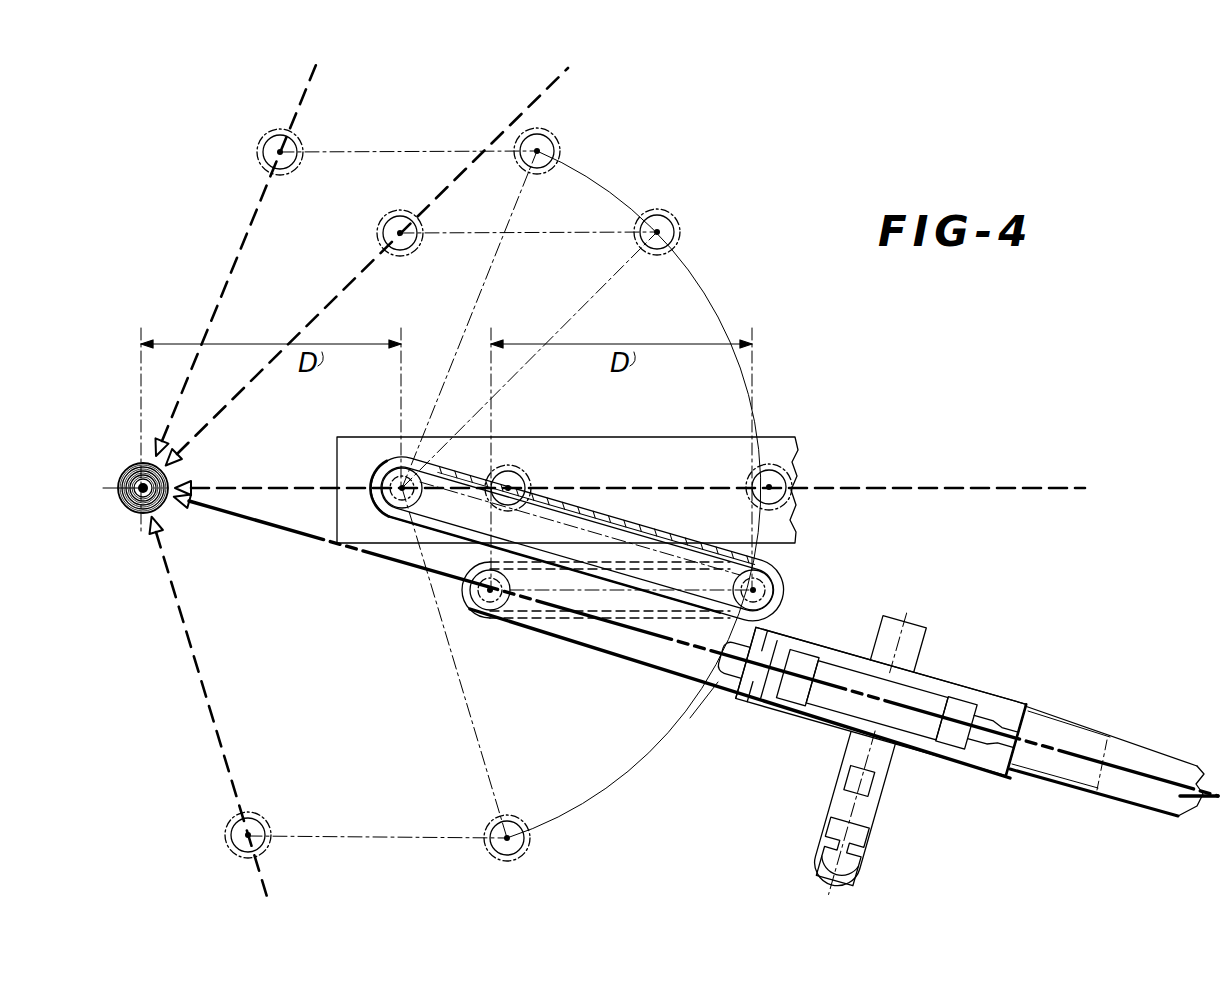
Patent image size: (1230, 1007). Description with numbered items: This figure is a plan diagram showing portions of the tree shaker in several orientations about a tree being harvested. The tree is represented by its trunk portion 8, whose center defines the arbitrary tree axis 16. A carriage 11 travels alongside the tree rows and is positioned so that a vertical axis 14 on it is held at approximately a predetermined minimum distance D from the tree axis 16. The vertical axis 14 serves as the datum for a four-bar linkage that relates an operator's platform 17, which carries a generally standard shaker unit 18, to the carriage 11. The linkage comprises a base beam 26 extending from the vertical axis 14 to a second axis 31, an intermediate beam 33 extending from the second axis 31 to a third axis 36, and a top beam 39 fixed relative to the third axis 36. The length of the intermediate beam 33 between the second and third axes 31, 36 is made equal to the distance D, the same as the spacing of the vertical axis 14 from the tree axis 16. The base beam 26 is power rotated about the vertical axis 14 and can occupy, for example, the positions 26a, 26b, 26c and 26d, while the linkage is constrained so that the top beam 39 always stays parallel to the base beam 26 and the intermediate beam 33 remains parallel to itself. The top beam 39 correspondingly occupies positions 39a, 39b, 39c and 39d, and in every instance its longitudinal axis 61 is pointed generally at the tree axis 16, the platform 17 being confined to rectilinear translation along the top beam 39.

The trunk portion 8 is at (128, 506).
The axis of the tree 16 is at (136, 472).
The carriage 11 is at (696, 436).
The vertical axis 14 is at (396, 484).
The operator's platform 17 is at (1000, 692).
The shaker unit 18 is at (924, 688).
The base beam 26 is at (638, 536).
The position of the base beam 26a is at (594, 510).
The position of the base beam 26b is at (478, 704).
The position of the base beam 26c is at (588, 320).
The position of the base beam 26d is at (460, 350).
The second axis 31 is at (540, 150).
The intermediate beam 33 is at (694, 560).
The third axis 36 is at (286, 150).
The top beam 39 is at (1122, 750).
The position of the top beam 39a is at (632, 632).
The position of the top beam 39b is at (216, 660).
The position of the top beam 39c is at (338, 288).
The position of the top beam 39d is at (242, 250).
The longitudinal axis of the top beam 61 is at (1214, 796).